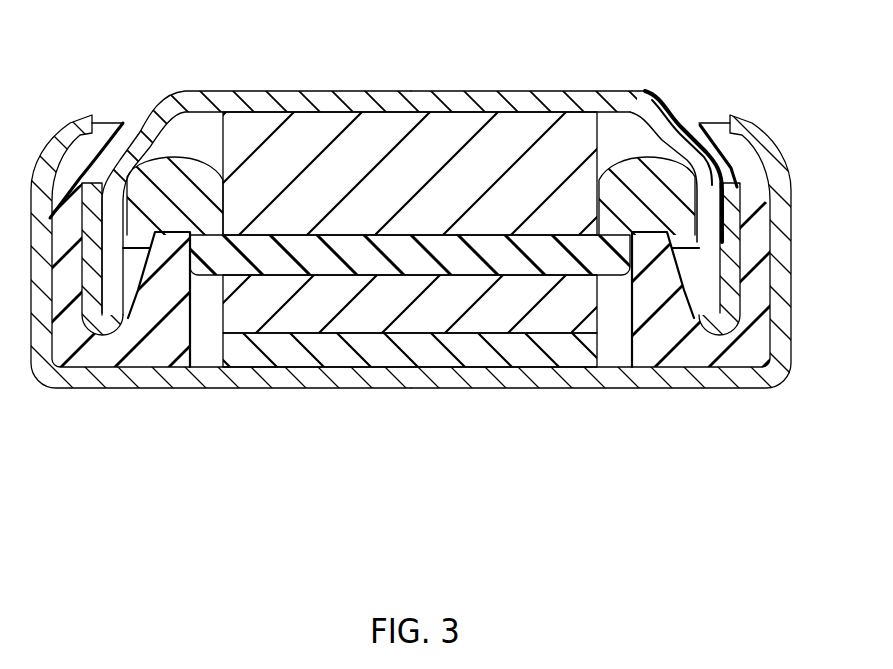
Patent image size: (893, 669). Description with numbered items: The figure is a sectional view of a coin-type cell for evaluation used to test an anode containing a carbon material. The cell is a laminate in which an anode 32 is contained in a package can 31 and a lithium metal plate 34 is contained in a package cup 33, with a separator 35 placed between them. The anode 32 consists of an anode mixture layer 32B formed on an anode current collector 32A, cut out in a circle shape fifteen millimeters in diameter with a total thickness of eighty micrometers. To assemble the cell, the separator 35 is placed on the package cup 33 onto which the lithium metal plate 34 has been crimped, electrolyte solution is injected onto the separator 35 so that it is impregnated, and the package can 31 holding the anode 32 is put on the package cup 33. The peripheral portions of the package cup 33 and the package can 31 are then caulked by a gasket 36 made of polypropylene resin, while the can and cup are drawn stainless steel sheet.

The package can 31 is at (279, 377).
The anode 32 is at (411, 394).
The anode current collector 32A is at (414, 353).
The anode mixture layer 32B is at (533, 323).
The package cup 33 is at (249, 100).
The lithium metal plate 34 is at (424, 167).
The separator 35 is at (652, 180).
The gasket 36 is at (147, 357).